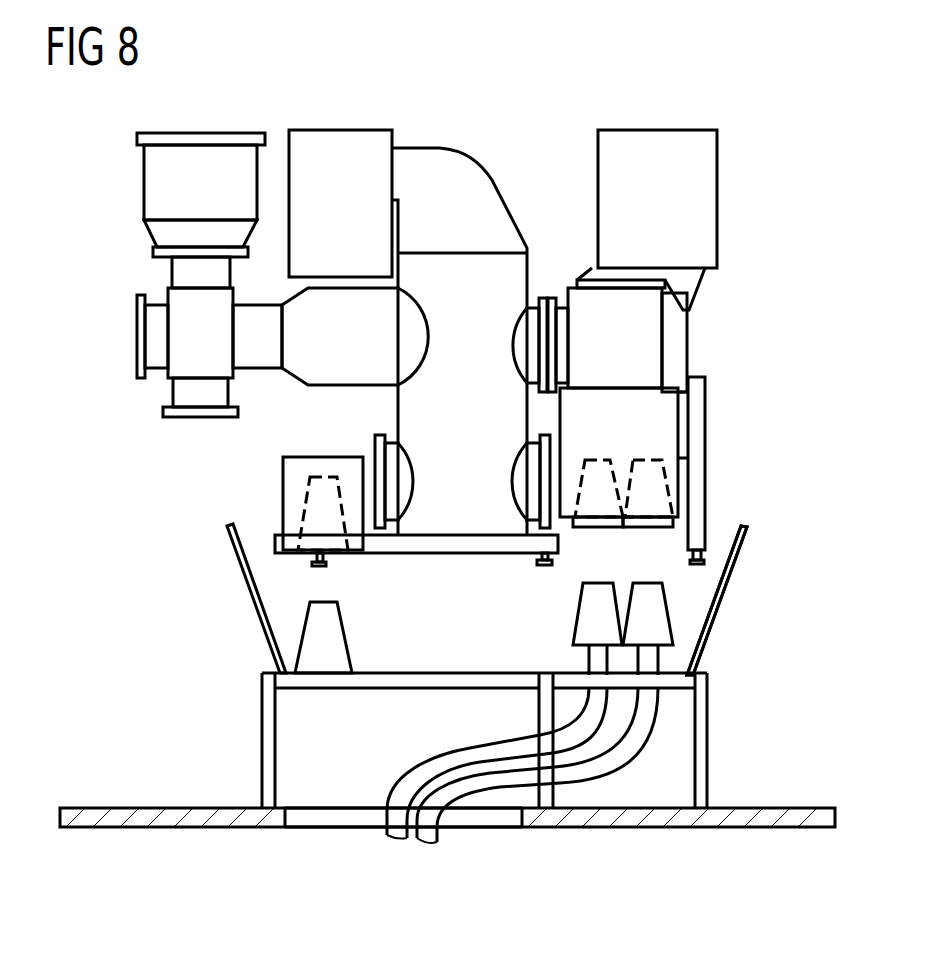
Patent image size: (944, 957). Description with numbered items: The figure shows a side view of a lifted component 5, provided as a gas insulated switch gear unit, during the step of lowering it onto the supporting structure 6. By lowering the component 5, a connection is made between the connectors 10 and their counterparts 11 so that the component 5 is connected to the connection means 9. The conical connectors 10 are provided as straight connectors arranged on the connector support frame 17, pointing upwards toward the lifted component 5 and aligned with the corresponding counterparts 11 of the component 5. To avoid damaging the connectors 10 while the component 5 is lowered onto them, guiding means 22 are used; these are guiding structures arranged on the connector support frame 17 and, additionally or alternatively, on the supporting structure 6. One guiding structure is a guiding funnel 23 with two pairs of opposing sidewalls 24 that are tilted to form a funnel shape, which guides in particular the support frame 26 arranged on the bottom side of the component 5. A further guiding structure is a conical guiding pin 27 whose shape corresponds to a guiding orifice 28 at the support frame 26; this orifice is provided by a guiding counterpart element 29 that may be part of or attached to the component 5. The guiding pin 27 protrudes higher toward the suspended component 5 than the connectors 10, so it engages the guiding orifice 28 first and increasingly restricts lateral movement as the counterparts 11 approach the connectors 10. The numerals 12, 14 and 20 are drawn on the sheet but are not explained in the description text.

The component 5 is at (657, 150).
The supporting structure 6 is at (822, 808).
The connection means 9 is at (427, 830).
The connectors 10 is at (655, 622).
The counterparts 11 is at (600, 483).
The recess in floor 12 is at (332, 818).
The installation surface 14 is at (450, 813).
The connector support frame 17 is at (700, 740).
The collecting container 20 is at (257, 637).
The guiding means 22 is at (768, 600).
The guiding funnel 23 is at (720, 600).
The sidewalls 24 is at (250, 592).
The support frame 26 is at (422, 543).
The guiding pin 27 is at (323, 643).
The guiding orifice 28 is at (313, 500).
The guiding counterpart element 29 is at (293, 470).